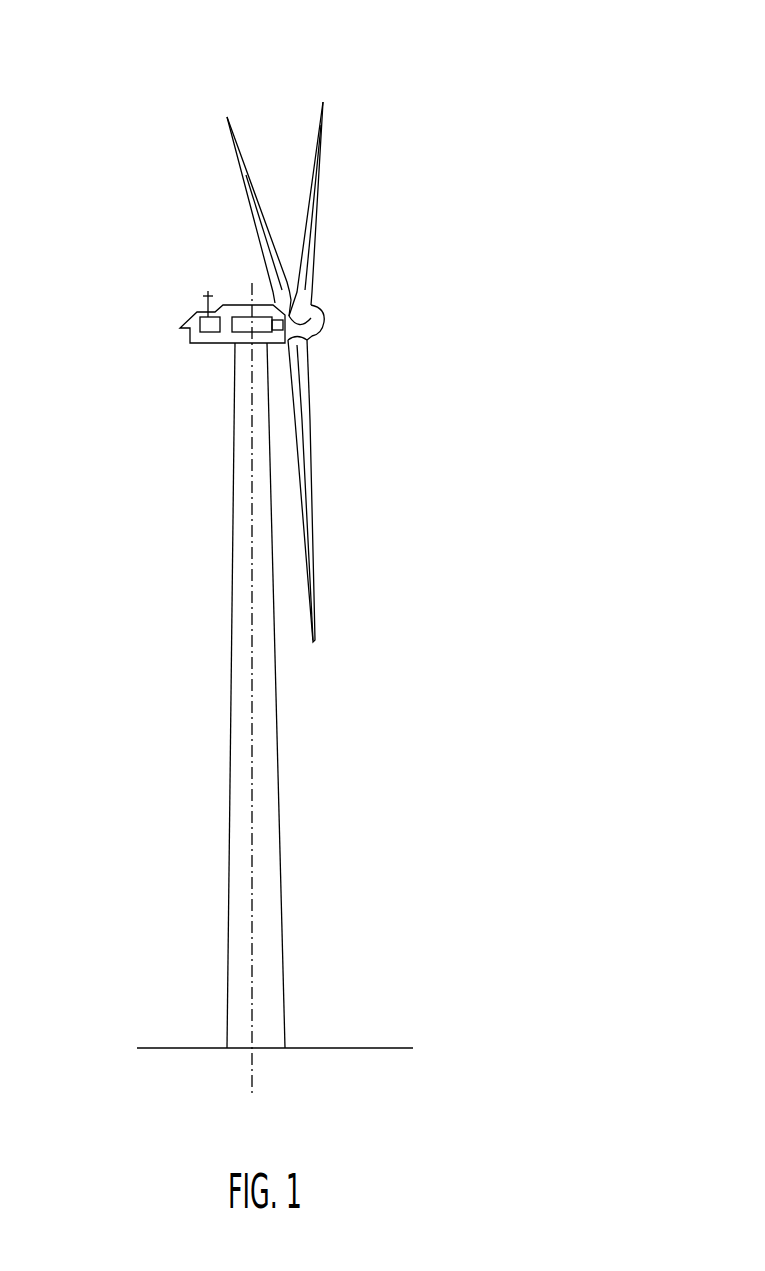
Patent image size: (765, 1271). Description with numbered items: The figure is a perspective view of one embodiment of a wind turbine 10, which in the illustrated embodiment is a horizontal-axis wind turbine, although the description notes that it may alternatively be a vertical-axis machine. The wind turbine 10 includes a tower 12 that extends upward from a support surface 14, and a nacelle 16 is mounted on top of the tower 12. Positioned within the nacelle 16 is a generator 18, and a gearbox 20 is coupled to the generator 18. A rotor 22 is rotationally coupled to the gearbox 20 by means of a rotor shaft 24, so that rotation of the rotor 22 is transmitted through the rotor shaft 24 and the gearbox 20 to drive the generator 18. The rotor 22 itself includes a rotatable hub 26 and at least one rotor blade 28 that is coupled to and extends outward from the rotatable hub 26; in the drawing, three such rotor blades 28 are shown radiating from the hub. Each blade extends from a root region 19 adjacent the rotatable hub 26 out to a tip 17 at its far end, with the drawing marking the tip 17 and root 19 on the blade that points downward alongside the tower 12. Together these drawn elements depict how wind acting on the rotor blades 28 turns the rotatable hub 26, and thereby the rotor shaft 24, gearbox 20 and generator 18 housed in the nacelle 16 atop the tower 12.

The wind turbine 10 is at (450, 41).
The tower 12 is at (230, 790).
The support surface 14 is at (188, 1047).
The nacelle 16 is at (200, 345).
The blade tip 17 is at (317, 642).
The generator 18 is at (211, 327).
The blade root 19 is at (308, 365).
The gearbox 20 is at (238, 305).
The rotor 22 is at (341, 298).
The rotor shaft 24 is at (280, 330).
The rotatable hub 26 is at (317, 328).
The rotor blade 28 is at (242, 172).